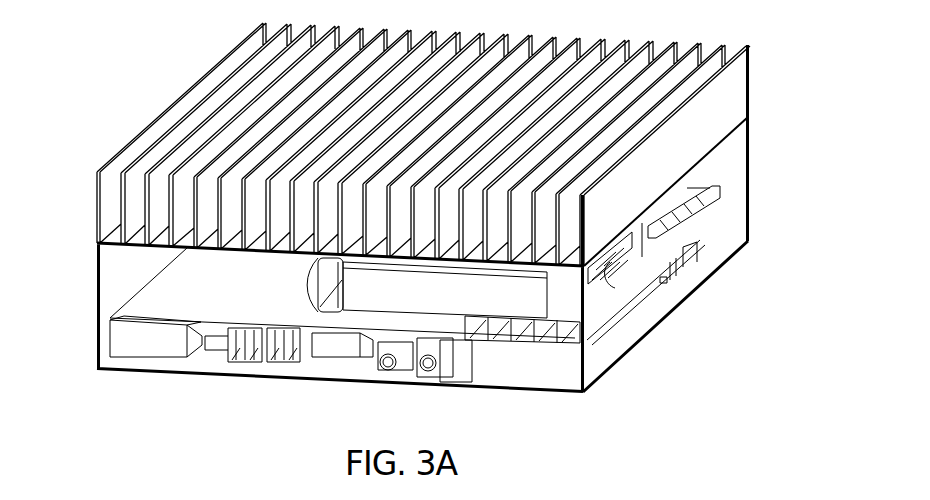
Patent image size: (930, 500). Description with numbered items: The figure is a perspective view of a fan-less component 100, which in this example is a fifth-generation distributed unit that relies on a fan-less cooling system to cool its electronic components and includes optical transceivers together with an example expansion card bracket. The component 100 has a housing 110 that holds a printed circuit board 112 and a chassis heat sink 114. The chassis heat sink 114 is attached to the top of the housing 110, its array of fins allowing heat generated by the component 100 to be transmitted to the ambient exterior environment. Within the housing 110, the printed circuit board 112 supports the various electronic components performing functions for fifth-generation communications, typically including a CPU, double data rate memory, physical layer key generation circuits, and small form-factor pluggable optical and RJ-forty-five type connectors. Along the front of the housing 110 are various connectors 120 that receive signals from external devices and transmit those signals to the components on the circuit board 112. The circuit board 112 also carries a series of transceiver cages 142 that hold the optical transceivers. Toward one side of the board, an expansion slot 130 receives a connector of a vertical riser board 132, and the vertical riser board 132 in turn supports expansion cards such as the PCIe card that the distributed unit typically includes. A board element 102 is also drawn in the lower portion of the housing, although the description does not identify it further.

The fan-less component 100 is at (177, 74).
The circuit board 102 is at (107, 337).
The housing 110 is at (727, 168).
The printed circuit board 112 is at (147, 290).
The chassis heat sink 114 is at (723, 105).
The connectors 120 is at (253, 360).
The expansion slot 130 is at (655, 292).
The vertical riser board 132 is at (690, 283).
The transceiver cages 142 is at (568, 388).